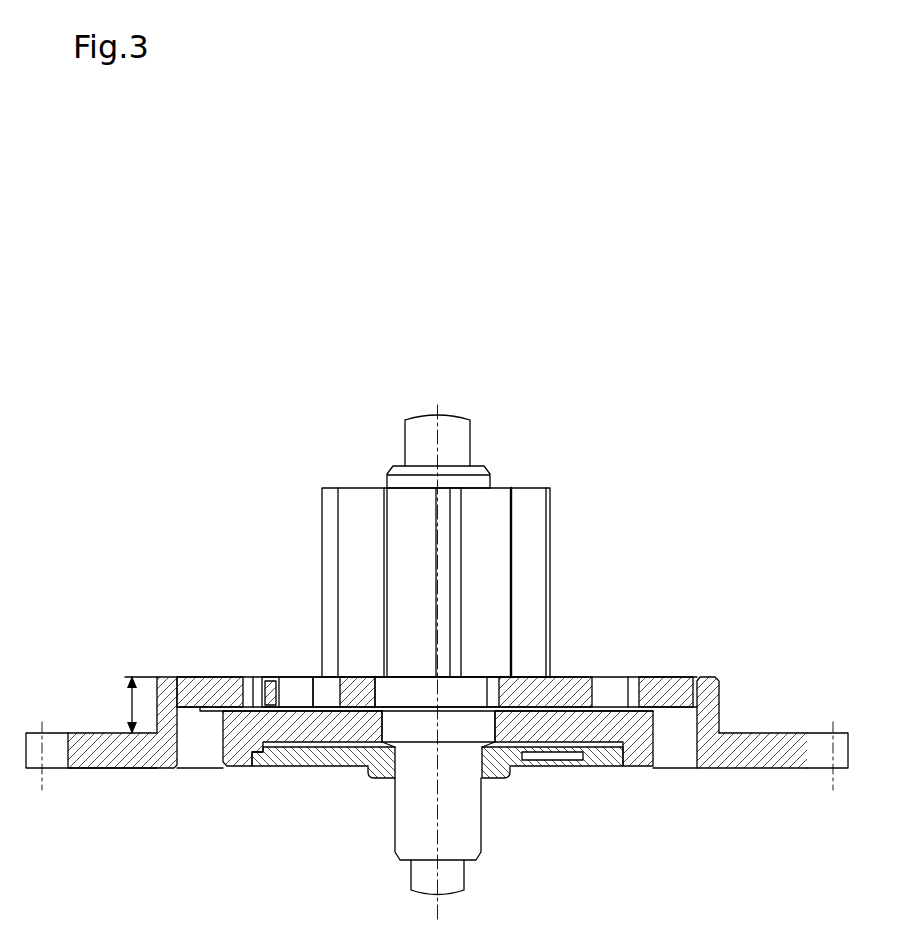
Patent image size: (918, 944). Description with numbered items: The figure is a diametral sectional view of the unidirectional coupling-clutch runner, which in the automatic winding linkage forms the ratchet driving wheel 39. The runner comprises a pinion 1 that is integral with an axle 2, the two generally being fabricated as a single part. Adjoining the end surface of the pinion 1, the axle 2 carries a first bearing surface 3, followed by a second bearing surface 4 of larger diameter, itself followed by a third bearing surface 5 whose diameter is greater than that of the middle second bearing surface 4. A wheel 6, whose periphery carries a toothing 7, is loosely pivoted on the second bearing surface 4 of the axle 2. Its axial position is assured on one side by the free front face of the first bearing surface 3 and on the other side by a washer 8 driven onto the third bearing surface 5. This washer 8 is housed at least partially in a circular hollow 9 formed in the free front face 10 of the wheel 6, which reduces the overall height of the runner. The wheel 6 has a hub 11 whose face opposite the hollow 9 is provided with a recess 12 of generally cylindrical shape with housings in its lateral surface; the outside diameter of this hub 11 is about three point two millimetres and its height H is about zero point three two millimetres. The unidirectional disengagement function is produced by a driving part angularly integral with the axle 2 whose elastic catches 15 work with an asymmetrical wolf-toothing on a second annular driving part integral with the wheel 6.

The pinion 1 is at (523, 563).
The axle 2 is at (428, 431).
The first bearing surface 3 is at (462, 703).
The second bearing surface 4 is at (475, 740).
The third bearing surface 5 is at (467, 830).
The wheel 6 is at (78, 748).
The toothing 7 is at (821, 757).
The washer 8 is at (345, 758).
The circular hollow 9 is at (618, 760).
The free front face 10 is at (130, 770).
The hub 11 is at (708, 690).
The recess 12 is at (301, 694).
The elastic catches 15 is at (270, 680).
The ratchet driving wheel 39 is at (175, 403).